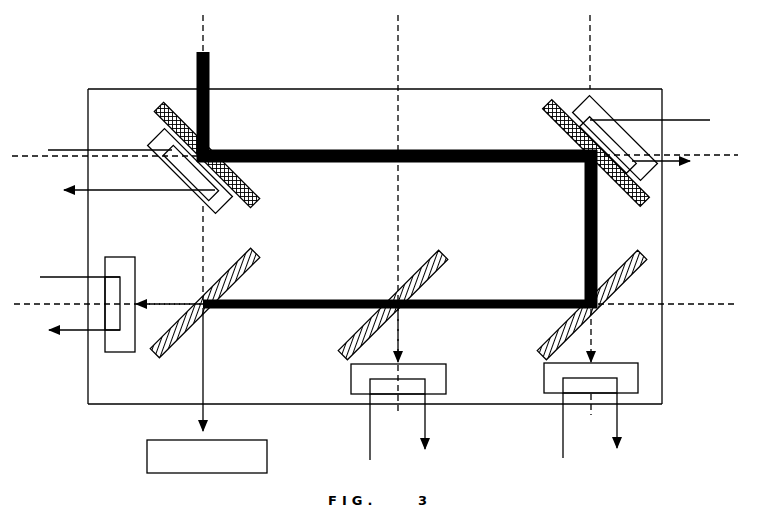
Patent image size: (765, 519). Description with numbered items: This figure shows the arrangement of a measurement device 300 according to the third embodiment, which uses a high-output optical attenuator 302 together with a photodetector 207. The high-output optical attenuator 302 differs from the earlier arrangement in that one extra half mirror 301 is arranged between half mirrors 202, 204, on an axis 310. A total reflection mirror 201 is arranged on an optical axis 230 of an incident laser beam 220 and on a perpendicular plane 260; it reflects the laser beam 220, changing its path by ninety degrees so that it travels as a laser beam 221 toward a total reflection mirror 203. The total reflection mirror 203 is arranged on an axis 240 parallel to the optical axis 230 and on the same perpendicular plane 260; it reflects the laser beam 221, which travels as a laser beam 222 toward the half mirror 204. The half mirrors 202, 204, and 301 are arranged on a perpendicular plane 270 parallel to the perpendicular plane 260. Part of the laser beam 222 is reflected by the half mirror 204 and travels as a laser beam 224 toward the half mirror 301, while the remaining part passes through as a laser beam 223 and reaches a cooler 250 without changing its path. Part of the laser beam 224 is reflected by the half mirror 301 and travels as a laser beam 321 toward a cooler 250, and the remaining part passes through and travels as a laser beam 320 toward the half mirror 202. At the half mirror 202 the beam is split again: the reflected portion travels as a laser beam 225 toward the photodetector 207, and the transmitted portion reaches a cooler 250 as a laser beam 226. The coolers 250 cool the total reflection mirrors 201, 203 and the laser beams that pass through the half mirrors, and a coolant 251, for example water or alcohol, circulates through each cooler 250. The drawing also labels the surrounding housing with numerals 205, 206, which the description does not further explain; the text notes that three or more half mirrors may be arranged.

The measurement device 300 is at (72, 102).
The high-output optical attenuator 302 is at (129, 89).
The housing 205 is at (320, 89).
The housing bottom wall 206 is at (300, 406).
The optical axis 230 is at (205, 37).
The axis 310 is at (400, 36).
The axis 240 is at (592, 39).
The perpendicular plane 260 is at (24, 160).
The perpendicular plane 270 is at (714, 309).
The laser beam 220 is at (212, 111).
The laser beam 221 is at (358, 164).
The laser beam 222 is at (585, 233).
The laser beam 224 is at (499, 299).
The laser beam 320 is at (305, 300).
The total reflection mirror 201 is at (153, 109).
The half mirror 202 is at (153, 349).
The total reflection mirror 203 is at (648, 189).
The half mirror 204 is at (641, 265).
The half mirror 301 is at (347, 340).
The laser beam 225 is at (207, 345).
The laser beam 226 is at (168, 302).
The laser beam 321 is at (402, 338).
The laser beam 223 is at (596, 341).
The photodetector 207 is at (147, 458).
The cooler 250 is at (607, 115).
The coolant 251 is at (685, 118).